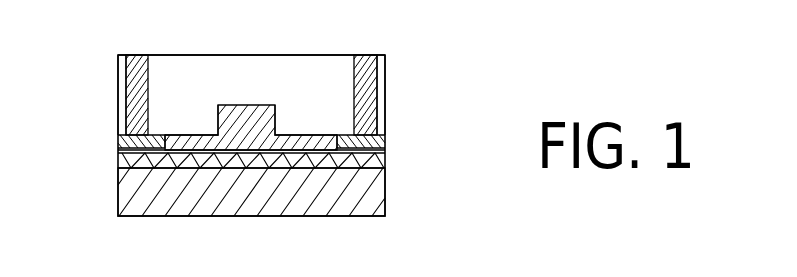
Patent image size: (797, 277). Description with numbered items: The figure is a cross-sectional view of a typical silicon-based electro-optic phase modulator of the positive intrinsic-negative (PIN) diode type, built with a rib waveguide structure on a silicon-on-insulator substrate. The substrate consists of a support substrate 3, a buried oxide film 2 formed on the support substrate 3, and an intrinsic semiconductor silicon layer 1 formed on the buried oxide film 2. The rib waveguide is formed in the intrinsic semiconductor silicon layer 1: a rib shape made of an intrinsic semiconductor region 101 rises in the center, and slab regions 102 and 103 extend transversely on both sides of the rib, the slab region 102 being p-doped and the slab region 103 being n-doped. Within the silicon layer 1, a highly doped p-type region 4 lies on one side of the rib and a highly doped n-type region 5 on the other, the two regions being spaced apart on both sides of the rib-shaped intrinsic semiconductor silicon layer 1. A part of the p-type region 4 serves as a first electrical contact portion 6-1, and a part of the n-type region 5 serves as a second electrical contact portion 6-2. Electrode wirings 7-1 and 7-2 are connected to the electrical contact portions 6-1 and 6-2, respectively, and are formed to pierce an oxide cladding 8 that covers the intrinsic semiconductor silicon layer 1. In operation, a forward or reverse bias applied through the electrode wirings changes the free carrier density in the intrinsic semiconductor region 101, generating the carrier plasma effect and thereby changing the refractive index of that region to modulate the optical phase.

The intrinsic semiconductor silicon layer 1 is at (110, 146).
The buried oxide film 2 is at (373, 163).
The support substrate 3 is at (253, 205).
The p-type region 4 is at (121, 151).
The n-type region 5 is at (367, 142).
The first electrical contact portion 6-1 is at (148, 147).
The second electrical contact portion 6-2 is at (385, 107).
The electrode wiring 7-1 is at (136, 55).
The electrode wiring 7-2 is at (365, 55).
The oxide cladding 8 is at (172, 62).
The intrinsic semiconductor region 101 is at (252, 105).
The slab region 102 is at (193, 134).
The slab region 103 is at (303, 134).